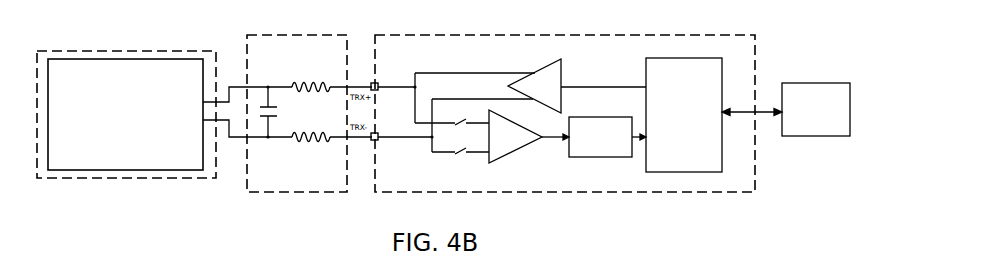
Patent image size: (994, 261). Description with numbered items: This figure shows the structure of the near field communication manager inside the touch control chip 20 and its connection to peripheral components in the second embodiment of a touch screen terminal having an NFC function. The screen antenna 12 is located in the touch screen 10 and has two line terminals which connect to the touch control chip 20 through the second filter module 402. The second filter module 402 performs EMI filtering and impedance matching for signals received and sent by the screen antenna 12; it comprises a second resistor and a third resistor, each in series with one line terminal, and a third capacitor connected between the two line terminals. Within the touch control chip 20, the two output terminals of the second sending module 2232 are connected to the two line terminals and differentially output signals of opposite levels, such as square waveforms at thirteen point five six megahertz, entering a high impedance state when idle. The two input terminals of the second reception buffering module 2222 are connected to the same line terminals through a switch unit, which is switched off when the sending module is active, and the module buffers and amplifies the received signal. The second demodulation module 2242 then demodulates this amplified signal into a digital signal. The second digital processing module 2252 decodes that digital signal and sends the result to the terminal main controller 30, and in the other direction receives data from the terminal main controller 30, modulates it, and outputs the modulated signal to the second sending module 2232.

The touch screen 10 is at (153, 51).
The screen antenna 12 is at (63, 57).
The second filter module 402 is at (277, 35).
The touch control chip 20 is at (466, 35).
The second sending module 2232 is at (535, 73).
The second reception buffering module 2222 is at (512, 160).
The second demodulation module 2242 is at (583, 158).
The second digital processing module 2252 is at (646, 73).
The terminal main controller 30 is at (795, 83).